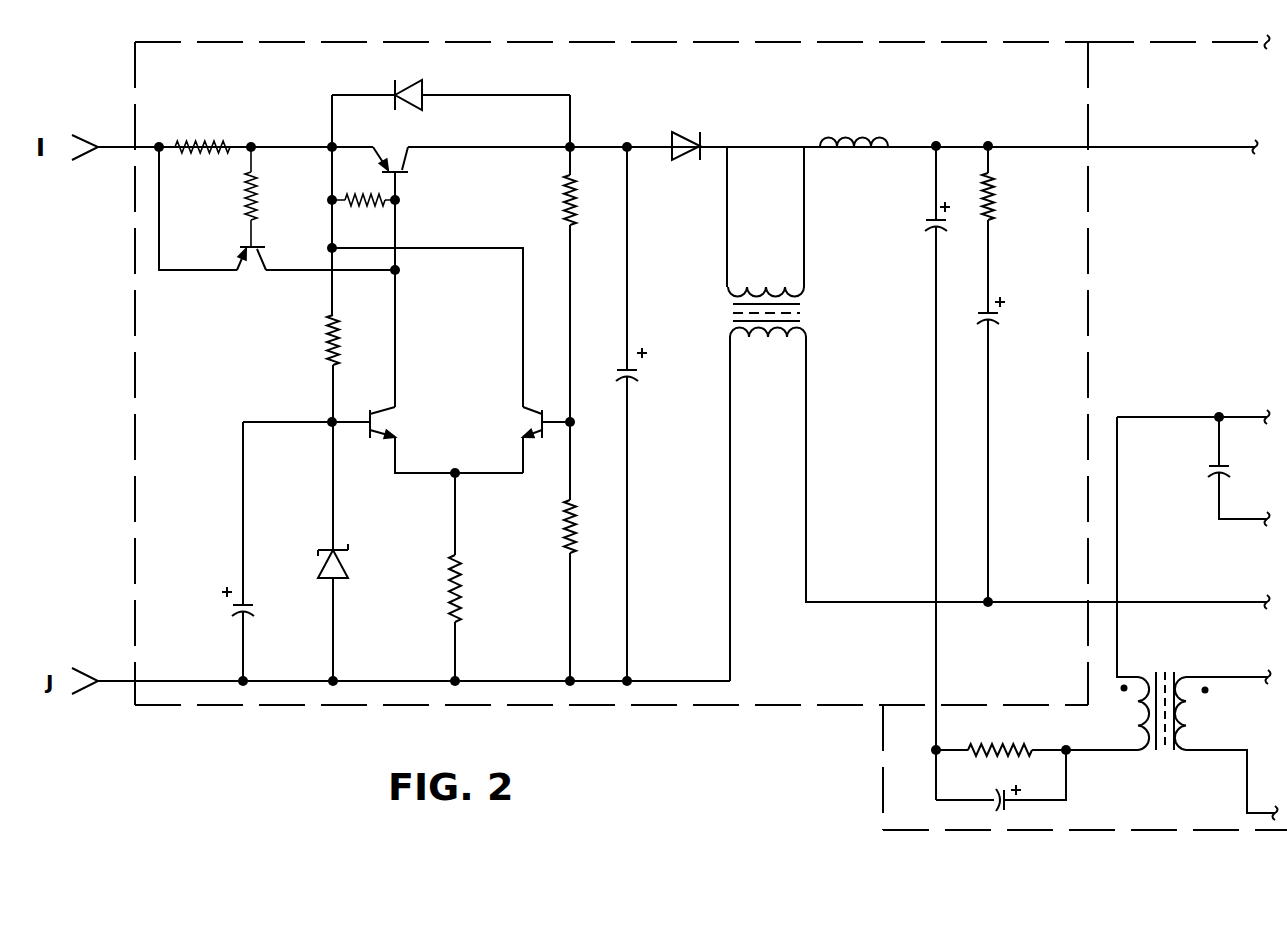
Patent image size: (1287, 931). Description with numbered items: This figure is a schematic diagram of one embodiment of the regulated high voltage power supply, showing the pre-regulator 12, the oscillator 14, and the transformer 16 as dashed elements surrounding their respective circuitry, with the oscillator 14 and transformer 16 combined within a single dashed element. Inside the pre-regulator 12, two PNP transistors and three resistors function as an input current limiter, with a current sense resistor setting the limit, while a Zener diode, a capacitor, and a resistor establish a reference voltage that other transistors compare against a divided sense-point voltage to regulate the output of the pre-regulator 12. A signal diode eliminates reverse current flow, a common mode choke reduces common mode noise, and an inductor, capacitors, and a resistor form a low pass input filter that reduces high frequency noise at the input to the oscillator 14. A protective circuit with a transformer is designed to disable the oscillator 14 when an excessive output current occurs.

The pre-regulator 12 is at (134, 74).
The oscillator 14 is at (1085, 432).
The transformer 16 is at (1132, 42).